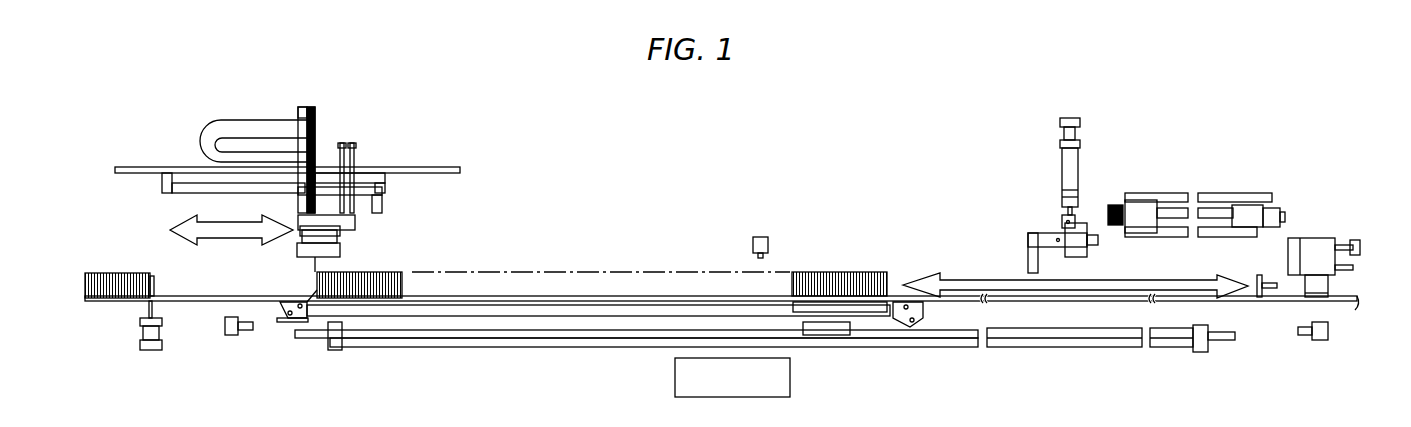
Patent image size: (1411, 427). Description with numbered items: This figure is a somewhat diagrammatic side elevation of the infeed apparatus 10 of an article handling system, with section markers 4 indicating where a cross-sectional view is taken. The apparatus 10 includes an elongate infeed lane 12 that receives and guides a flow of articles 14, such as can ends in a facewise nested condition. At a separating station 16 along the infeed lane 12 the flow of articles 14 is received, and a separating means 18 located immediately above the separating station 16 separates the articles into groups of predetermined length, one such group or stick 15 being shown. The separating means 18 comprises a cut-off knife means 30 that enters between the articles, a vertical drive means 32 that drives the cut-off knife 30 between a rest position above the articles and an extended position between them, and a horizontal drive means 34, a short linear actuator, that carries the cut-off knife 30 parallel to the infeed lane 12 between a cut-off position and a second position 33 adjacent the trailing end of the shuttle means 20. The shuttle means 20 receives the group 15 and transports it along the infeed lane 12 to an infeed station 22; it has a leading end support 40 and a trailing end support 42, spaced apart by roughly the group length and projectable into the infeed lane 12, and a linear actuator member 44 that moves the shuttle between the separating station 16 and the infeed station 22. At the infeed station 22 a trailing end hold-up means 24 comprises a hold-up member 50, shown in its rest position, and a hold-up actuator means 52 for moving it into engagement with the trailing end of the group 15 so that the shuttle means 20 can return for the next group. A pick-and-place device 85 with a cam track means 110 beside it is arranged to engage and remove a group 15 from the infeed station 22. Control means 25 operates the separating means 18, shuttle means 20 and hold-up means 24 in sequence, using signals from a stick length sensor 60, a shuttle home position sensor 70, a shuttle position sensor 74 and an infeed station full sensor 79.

The section line 4- 4 is at (292, 107).
The infeed apparatus 10 is at (520, 95).
The infeed lane 12 is at (205, 303).
The articles 14 is at (100, 272).
The group of articles 15 is at (822, 266).
The separating station 16 is at (135, 210).
The separating means 18 is at (395, 112).
The shuttle means 20 is at (583, 352).
The infeed station 22 is at (1176, 132).
The trailing end hold-up means 24 is at (1015, 158).
The control means 25 is at (732, 388).
The cut-off knife means 30 is at (313, 270).
The vertical drive means 32 is at (302, 233).
The second position 33 is at (345, 258).
The horizontal drive means 34 is at (183, 178).
The leading end support 40 is at (890, 292).
The trailing end support 42 is at (313, 296).
The linear actuator member 44 is at (447, 336).
The hold-up member 50 is at (1028, 262).
The hold-up actuator means 52 is at (1065, 178).
The stick length sensor means 60 is at (761, 236).
The shuttle home position sensor 70 is at (232, 336).
The shuttle position sensor 74 is at (1321, 353).
The infeed station full sensor 79 is at (1264, 329).
The pick-and-place device 85 is at (1230, 188).
The cam track means 110 is at (1312, 236).